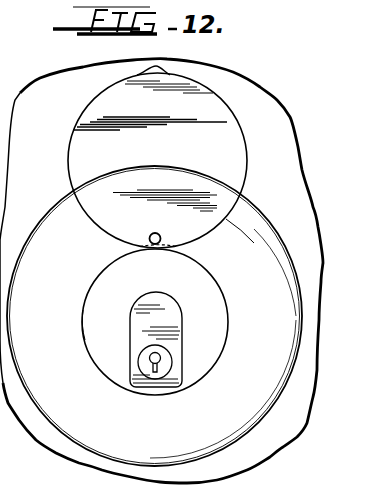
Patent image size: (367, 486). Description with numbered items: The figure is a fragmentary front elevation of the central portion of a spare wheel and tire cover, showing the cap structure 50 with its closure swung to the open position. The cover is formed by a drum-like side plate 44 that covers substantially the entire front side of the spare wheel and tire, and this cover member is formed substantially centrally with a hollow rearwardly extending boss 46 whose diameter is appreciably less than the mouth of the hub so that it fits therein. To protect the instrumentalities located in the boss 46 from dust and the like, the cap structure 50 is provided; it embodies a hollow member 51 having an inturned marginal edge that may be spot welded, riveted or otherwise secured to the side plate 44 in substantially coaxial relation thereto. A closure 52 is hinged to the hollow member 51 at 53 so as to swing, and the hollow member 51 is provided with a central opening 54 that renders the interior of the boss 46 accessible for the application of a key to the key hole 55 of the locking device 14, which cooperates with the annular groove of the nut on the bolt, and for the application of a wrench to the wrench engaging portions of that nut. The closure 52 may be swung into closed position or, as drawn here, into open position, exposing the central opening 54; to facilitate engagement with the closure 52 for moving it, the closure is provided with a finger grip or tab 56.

The locking device 14 is at (130, 372).
The side plate 44 is at (284, 108).
The boss 46 is at (213, 294).
The cap structure 50 is at (50, 211).
The hollow member 51 is at (247, 231).
The closure 52 is at (232, 168).
The hinge 53 is at (151, 234).
The central opening 54 is at (79, 330).
The key hole 55 is at (159, 372).
The finger grip or tab 56 is at (166, 73).